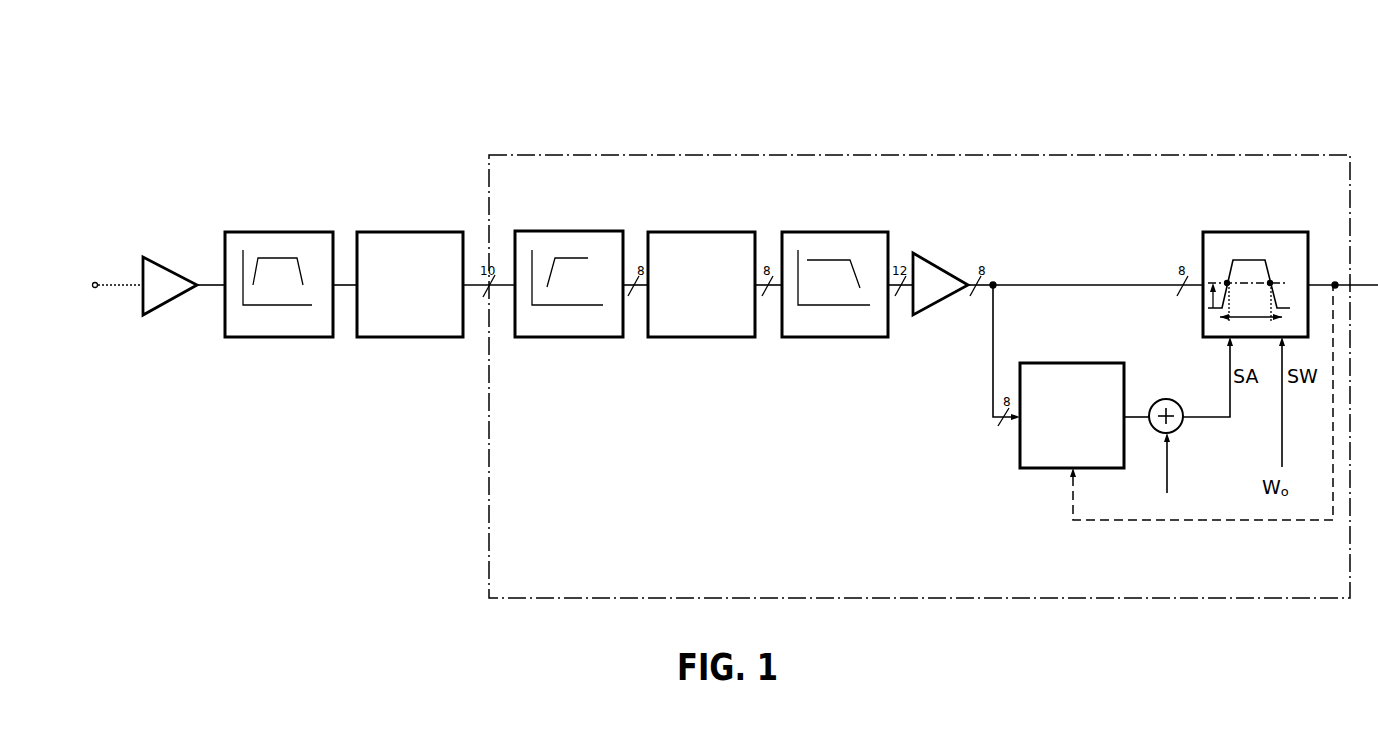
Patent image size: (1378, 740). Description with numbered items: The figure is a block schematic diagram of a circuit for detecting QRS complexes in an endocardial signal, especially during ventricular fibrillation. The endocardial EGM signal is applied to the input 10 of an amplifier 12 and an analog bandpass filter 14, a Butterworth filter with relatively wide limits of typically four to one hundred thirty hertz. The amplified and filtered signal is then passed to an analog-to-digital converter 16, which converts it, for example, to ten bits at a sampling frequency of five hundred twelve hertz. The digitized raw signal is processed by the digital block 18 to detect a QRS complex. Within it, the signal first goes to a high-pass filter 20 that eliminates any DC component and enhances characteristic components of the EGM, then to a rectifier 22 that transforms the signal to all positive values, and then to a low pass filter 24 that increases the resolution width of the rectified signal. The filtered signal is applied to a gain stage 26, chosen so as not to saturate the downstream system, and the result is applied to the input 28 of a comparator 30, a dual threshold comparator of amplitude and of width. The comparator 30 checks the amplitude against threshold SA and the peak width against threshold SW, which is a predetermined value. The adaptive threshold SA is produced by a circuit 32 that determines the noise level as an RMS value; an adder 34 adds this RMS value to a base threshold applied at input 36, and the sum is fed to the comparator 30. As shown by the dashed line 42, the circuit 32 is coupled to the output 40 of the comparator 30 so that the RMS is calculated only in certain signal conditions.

The input 10 is at (96, 281).
The amplifier 12 is at (172, 268).
The analog bandpass filter 14 is at (285, 232).
The analog-to-digital converter 16 is at (413, 232).
The digital block 18 is at (808, 153).
The high-pass filter 20 is at (582, 231).
The rectifier 22 is at (712, 232).
The low pass filter 24 is at (842, 232).
The gain stage 26 is at (940, 263).
The input of comparator 28 is at (1203, 283).
The comparator 30 is at (1263, 232).
The circuit for determining noise level 32 is at (1080, 363).
The adder 34 is at (1167, 399).
The input of adder 36 is at (1169, 477).
The output of comparator 40 is at (1360, 283).
The dashed line 42 is at (1200, 522).